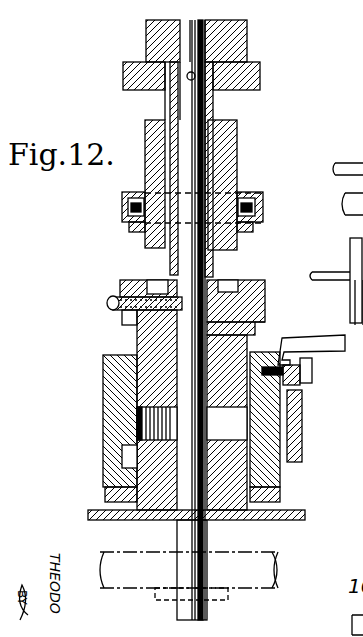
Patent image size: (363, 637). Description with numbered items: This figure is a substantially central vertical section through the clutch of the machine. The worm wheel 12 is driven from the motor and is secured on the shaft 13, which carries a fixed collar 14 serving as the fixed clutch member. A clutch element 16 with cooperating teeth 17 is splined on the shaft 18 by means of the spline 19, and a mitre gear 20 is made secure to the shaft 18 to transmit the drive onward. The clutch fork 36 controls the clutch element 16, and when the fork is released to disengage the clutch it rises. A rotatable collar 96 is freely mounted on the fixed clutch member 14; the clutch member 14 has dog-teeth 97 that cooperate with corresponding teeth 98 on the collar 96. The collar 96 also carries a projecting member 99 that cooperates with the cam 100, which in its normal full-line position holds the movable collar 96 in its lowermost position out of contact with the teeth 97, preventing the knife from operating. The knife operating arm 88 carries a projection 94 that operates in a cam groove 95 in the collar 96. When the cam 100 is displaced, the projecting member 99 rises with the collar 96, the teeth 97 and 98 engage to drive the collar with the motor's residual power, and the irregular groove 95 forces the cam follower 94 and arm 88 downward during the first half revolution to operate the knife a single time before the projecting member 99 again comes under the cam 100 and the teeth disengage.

The worm wheel 12 is at (282, 572).
The shaft 13 is at (208, 550).
The fixed collar 14 is at (260, 283).
The clutch element 16 is at (240, 230).
The cooperating teeth 17 is at (146, 242).
The shaft 18 is at (215, 106).
The spline 19 is at (168, 100).
The mitre gear 20 is at (261, 79).
The clutch fork 36 is at (252, 194).
The knife operating arm 88 is at (303, 452).
The projection 94 is at (192, 423).
The cam groove 95 is at (125, 458).
The rotatable collar 96 is at (112, 400).
The dog-teeth 97 is at (265, 325).
The teeth 98 is at (130, 342).
The projecting member 99 is at (305, 386).
The cam 100 is at (292, 352).